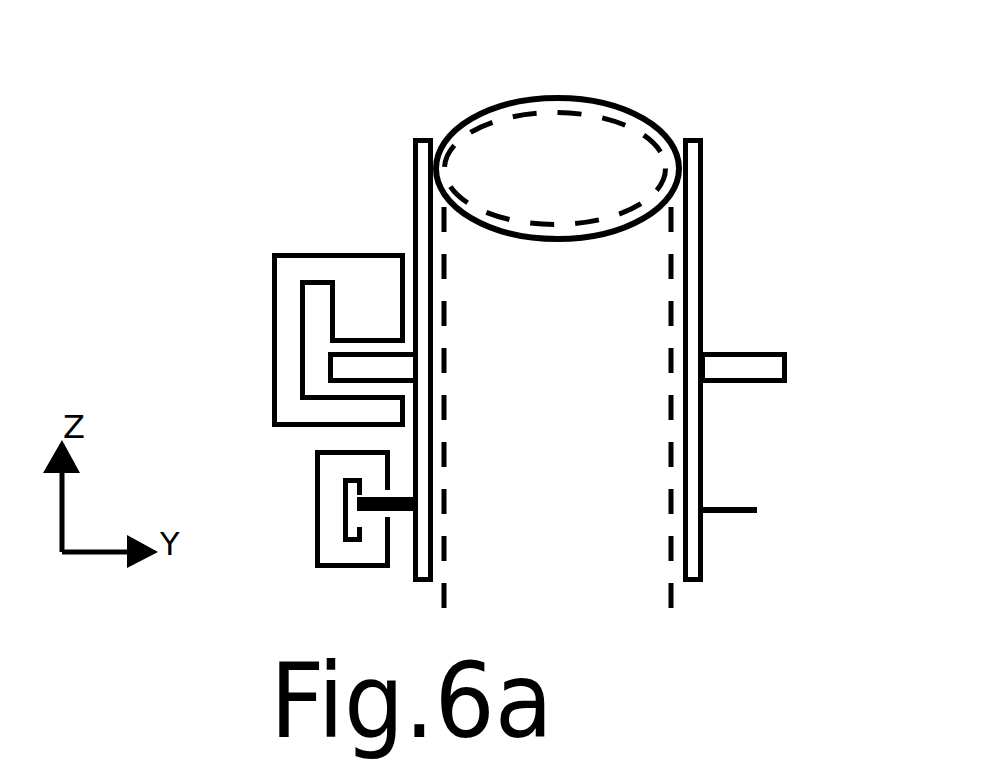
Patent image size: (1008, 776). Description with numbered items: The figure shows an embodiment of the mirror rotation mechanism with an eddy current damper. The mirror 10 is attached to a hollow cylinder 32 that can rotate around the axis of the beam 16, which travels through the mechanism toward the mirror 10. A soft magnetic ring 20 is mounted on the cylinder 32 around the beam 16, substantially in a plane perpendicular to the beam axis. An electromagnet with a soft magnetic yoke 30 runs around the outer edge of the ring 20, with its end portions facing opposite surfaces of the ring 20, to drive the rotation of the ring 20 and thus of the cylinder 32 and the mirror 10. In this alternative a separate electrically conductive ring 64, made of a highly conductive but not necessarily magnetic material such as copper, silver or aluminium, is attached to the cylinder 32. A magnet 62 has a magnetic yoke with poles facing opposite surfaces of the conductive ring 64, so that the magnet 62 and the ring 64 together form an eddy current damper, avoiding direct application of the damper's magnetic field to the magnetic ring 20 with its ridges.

The mirror 10 is at (613, 98).
The beam 16 is at (684, 299).
The soft magnetic ring 20 is at (330, 365).
The soft magnetic yoke 30 is at (272, 340).
The hollow cylinder 32 is at (684, 568).
The magnet 62 is at (315, 512).
The electrically conductive ring 64 is at (408, 513).